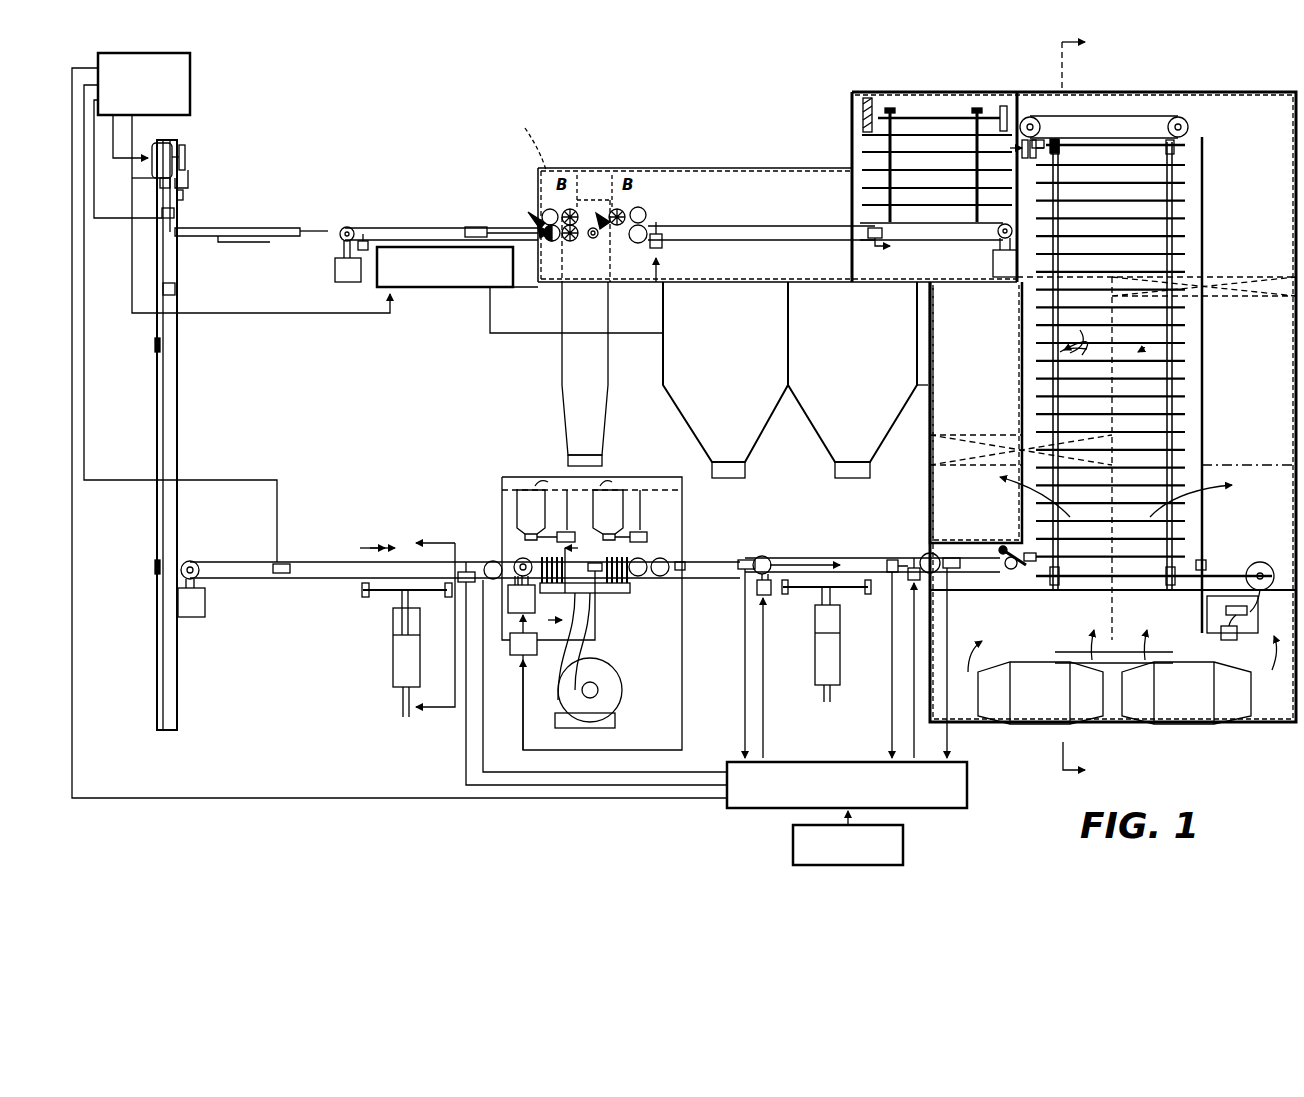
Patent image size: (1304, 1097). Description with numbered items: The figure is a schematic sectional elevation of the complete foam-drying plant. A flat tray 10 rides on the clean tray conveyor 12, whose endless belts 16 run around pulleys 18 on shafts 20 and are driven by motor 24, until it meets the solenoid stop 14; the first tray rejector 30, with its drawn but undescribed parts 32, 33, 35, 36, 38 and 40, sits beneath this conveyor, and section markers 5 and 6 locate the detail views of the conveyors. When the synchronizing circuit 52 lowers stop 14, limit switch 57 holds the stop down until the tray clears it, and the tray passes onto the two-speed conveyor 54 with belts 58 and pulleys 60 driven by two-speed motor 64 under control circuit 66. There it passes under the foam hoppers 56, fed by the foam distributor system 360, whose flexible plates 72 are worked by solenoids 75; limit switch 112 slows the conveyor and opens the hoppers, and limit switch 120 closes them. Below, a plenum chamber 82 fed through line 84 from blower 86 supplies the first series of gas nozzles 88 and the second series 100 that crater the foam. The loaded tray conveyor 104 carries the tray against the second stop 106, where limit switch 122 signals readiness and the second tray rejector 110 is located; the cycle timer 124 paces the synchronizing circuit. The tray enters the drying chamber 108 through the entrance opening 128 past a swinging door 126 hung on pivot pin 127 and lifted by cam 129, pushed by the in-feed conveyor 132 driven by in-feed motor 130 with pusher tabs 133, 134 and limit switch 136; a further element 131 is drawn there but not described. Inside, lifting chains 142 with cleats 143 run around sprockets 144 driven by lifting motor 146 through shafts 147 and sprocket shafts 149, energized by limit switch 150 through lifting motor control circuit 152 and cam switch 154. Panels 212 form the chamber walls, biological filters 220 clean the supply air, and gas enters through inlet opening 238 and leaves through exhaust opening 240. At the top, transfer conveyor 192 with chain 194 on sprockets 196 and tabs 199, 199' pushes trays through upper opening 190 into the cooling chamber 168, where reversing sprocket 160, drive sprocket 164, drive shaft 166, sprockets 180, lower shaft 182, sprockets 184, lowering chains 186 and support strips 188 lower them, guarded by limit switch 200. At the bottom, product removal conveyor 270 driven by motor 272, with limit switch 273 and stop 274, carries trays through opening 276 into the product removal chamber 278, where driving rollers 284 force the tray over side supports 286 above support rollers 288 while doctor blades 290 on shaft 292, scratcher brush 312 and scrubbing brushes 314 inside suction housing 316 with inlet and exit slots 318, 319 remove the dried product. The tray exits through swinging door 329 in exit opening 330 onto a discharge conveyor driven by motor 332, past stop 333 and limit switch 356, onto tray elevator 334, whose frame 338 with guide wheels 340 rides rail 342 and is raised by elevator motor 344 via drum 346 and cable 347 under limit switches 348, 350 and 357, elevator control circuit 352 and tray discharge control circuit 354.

The section line 5- 5 is at (412, 625).
The section line 6- 6 is at (564, 586).
The flat tray 10 is at (282, 232).
The clean tray conveyor 12 is at (240, 580).
The solenoid-actuated stop 14 is at (462, 565).
The endless belts 16 is at (230, 562).
The pulleys 18 is at (190, 562).
The transverse shafts 20 is at (197, 564).
The clean tray conveyor motor 24 is at (190, 617).
The first tray rejector 30 is at (352, 656).
The air cylinder 32 is at (394, 660).
The piston rod 33 is at (398, 614).
The connecting rod 35 is at (400, 602).
The stop bar 36 is at (363, 590).
The cylinder rod end 38 is at (403, 702).
The cylinder body 40 is at (398, 632).
The synchronizing circuit 52 is at (730, 810).
The two-speed conveyor 54 is at (664, 556).
The foam hoppers 56 is at (524, 490).
The limit switch 57 is at (480, 560).
The endless belts 58 is at (640, 580).
The rotatable pulleys 60 is at (488, 582).
The two-speed motor 64 is at (518, 655).
The control circuit 66 is at (536, 656).
The flexible plate 72 is at (560, 537).
The solenoid 75 is at (567, 528).
The plenum chamber 82 is at (597, 575).
The gas supply line 84 is at (566, 648).
The blower 86 is at (622, 682).
The first series of gas nozzles 88 is at (521, 594).
The second series of gas nozzles 100 is at (612, 560).
The loaded tray conveyor 104 is at (816, 557).
The second solenoid-operated stop 106 is at (914, 566).
The drying chamber 108 is at (1008, 306).
The second tray rejector 110 is at (812, 672).
The limit switch 112 is at (596, 594).
The limit switch 120 is at (745, 560).
The limit switch 122 is at (866, 590).
The cycle timer 124 is at (905, 846).
The swinging door 126 is at (1011, 570).
The pivot pin 127 is at (1002, 550).
The entrance opening 128 is at (1036, 556).
The cam 129 is at (1005, 565).
The in-feed motor 130 is at (771, 596).
The sensor line 131 is at (955, 575).
The in-feed conveyor 132 is at (852, 556).
The first tray pusher tab 133 is at (744, 570).
The second tray pusher tab 134 is at (968, 647).
The limit switch 136 is at (763, 557).
The lifting chains 142 is at (1152, 195).
The cleats 143 is at (1162, 232).
The sprockets 144 is at (1062, 147).
The lifting motor 146 is at (1262, 562).
The shafts 147 is at (1258, 570).
The sprocket shafts 149 is at (1150, 147).
The limit switch 150 is at (1202, 560).
The lifting motor control circuit 152 is at (1221, 634).
The cam switch 154 is at (1258, 612).
The reversing sprocket 160 is at (1028, 162).
The drive sprocket 164 is at (1000, 124).
The drive shaft 166 is at (868, 100).
The cooling chamber 168 is at (840, 140).
The upper sprockets 180 is at (910, 152).
The lower shaft 182 is at (918, 212).
The lower sprockets 184 is at (866, 216).
The lowering chains 186 is at (850, 165).
The support strips 188 is at (920, 152).
The upper opening 190 is at (937, 152).
The transfer conveyor 192 is at (1042, 115).
The transfer chain 194 is at (1150, 118).
The sprockets 196 is at (1032, 117).
The first transfer tab 199 is at (1211, 77).
The second transfer tab 199' is at (1001, 99).
The limit switch 200 is at (1058, 143).
The horizontal panels 212 is at (1204, 405).
The biological filters 220 is at (1002, 712).
The inlet opening 238 is at (1020, 342).
The exhaust opening 240 is at (1000, 477).
The product removal conveyor 270 is at (706, 226).
The product removal conveyor motor 272 is at (990, 278).
The limit switch 273 is at (868, 238).
The stop 274 is at (680, 242).
The opening 276 is at (866, 240).
The product removal chamber 278 is at (592, 167).
The driving rollers 284 is at (552, 214).
The side supports 286 is at (612, 252).
The support rollers 288 is at (585, 365).
The doctor blades 290 is at (600, 212).
The rotatable shaft 292 is at (584, 205).
The scratcher brush 312 is at (642, 212).
The scrubbing brushes 314 is at (542, 212).
The suction housing 316 is at (524, 138).
The inlet slot 318 is at (660, 268).
The exit slot 319 is at (550, 242).
The swinging door 329 is at (540, 232).
The exit opening 330 is at (528, 215).
The tray discharge conveyor motor 332 is at (335, 269).
The stop 333 is at (364, 241).
The tray elevator 334 is at (272, 238).
The vertical frame 338 is at (158, 234).
The guide wheels 340 is at (180, 195).
The vertical rail 342 is at (180, 354).
The elevator motor 344 is at (162, 143).
The drum 346 is at (186, 152).
The elevator cable 347 is at (190, 180).
The limit switch 348 is at (285, 563).
The limit switch 350 is at (158, 184).
The elevator control circuit 352 is at (192, 58).
The tray discharge control circuit 354 is at (440, 289).
The limit switch 356 is at (472, 227).
The limit switch 357 is at (176, 213).
The foam distributor system 360 is at (540, 478).